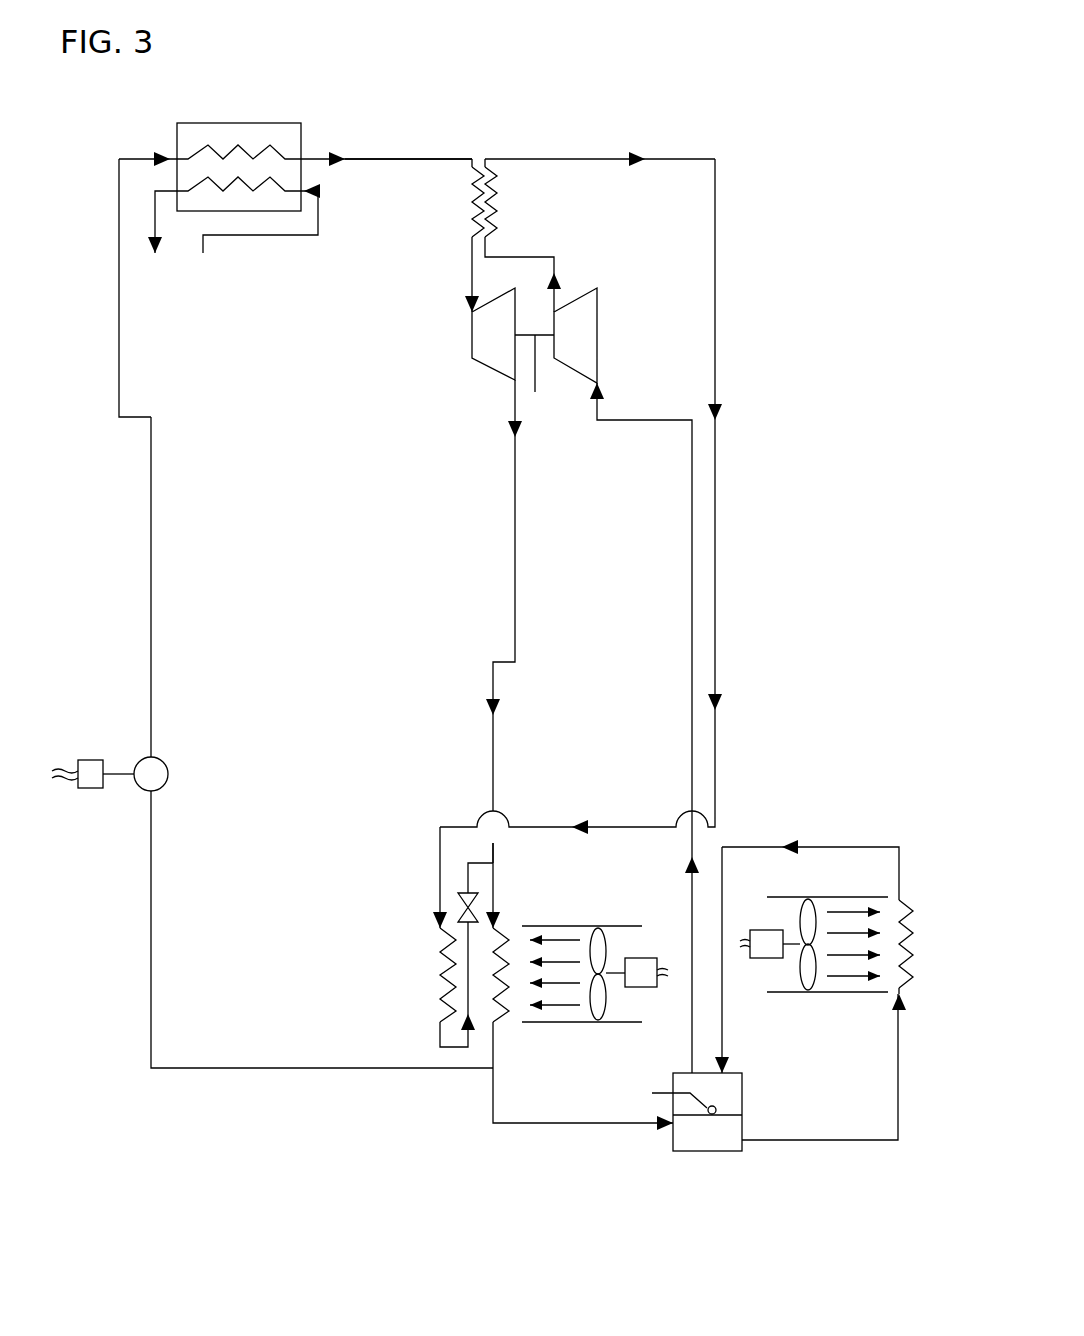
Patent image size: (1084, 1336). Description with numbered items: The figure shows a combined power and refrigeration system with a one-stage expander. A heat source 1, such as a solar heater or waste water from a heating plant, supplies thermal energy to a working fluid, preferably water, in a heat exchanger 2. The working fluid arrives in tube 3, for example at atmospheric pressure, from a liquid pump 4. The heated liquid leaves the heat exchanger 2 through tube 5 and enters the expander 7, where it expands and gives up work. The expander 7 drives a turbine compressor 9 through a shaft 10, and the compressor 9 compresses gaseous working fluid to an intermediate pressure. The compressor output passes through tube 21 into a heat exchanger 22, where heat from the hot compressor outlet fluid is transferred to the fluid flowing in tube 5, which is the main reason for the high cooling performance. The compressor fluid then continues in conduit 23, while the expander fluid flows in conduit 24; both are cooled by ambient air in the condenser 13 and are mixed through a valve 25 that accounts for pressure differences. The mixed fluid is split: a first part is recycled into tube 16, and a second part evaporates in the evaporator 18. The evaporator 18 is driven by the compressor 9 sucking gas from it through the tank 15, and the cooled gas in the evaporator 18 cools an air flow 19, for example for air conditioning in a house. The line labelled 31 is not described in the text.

The heat source 1 is at (258, 238).
The heat exchanger 2 is at (242, 122).
The tube 3 is at (152, 578).
The liquid pump 4 is at (153, 778).
The tube 5 is at (385, 157).
The expander 7 is at (469, 338).
The turbine compressor 9 is at (597, 333).
The shaft 10 is at (527, 330).
The condenser 13 is at (596, 915).
The tank 15 is at (707, 1135).
The tube 16 is at (152, 943).
The evaporator 18 is at (933, 890).
The air flow 19 is at (848, 913).
The tube 21 is at (520, 253).
The heat exchanger 22 is at (503, 205).
The conduit 23 is at (716, 552).
The conduit 24 is at (516, 571).
The valve 25 is at (477, 903).
The turbine inlet line 31 is at (688, 579).